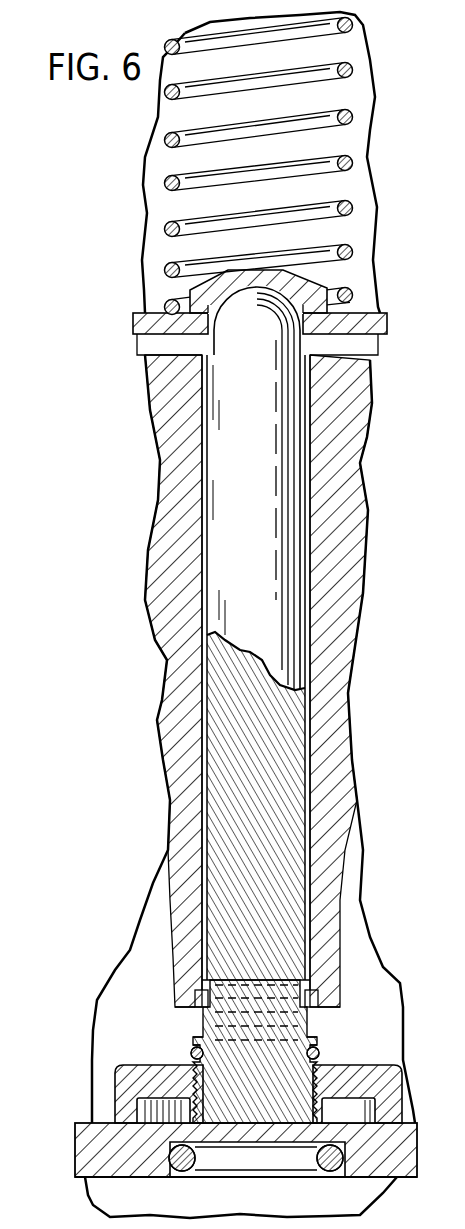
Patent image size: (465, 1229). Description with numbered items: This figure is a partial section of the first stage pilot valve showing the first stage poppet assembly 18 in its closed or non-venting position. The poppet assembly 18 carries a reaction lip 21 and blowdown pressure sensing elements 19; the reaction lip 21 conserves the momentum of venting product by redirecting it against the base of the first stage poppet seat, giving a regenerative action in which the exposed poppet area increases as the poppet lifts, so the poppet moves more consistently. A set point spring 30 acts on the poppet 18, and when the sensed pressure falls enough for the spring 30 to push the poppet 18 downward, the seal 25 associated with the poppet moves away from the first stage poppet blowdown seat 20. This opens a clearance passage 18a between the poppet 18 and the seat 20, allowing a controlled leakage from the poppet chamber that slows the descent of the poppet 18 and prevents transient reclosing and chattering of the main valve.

The set point spring 30 is at (325, 182).
The first stage poppet assembly 18 is at (292, 510).
The clearance passage 18a is at (203, 750).
The first stage poppet blowdown seat 20 is at (327, 962).
The blowdown pressure sensing elements 19 is at (315, 1030).
The seal 25 is at (318, 1056).
The reaction lip 21 is at (123, 1083).